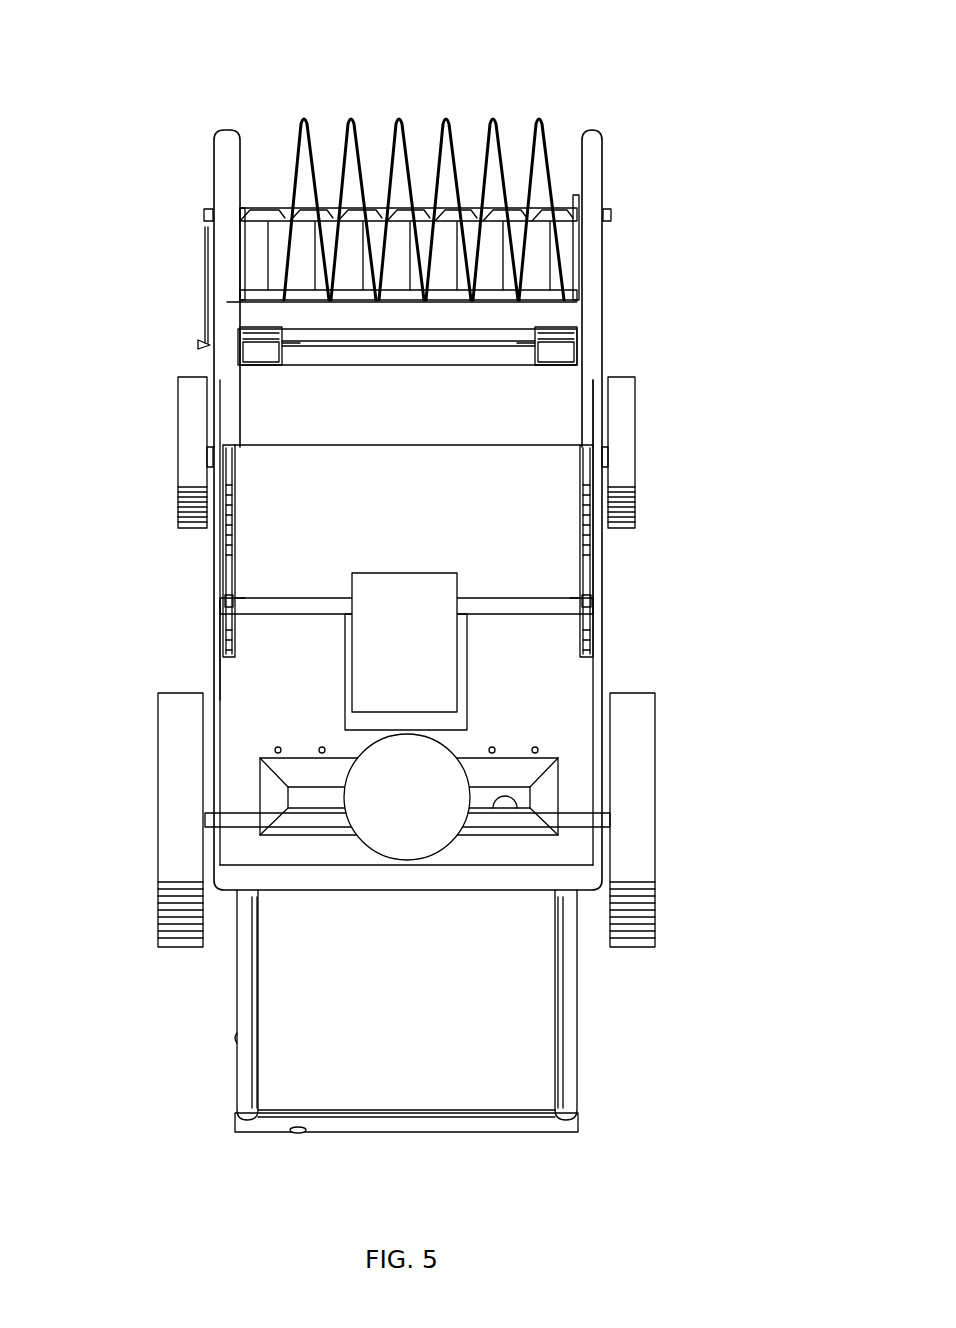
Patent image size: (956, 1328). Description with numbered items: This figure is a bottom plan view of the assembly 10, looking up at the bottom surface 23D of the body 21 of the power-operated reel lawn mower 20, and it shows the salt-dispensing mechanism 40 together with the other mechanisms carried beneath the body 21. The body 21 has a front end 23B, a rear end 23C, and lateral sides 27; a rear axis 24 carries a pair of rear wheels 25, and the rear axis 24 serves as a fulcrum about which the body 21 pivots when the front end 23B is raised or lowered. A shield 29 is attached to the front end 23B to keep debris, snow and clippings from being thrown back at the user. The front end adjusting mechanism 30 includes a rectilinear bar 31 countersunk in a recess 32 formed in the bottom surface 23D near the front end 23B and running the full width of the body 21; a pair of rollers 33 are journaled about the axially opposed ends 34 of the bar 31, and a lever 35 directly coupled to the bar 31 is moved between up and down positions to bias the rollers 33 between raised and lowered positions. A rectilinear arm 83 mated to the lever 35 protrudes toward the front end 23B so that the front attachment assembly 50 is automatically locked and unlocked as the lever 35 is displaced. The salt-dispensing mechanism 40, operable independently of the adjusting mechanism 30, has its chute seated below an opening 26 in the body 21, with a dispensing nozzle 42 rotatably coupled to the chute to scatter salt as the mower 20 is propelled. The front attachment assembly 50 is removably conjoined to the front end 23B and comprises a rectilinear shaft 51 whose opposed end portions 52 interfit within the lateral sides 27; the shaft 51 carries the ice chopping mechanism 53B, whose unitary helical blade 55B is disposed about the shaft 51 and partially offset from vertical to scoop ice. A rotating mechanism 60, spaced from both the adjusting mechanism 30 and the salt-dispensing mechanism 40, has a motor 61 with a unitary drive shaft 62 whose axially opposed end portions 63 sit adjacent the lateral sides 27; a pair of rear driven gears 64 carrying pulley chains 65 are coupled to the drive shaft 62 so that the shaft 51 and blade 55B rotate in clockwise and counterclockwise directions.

The assembly 10 is at (745, 172).
The power-operated reel lawn mower 20 is at (223, 897).
The body 21 is at (635, 378).
The front end 23B is at (222, 128).
The rear end 23C is at (322, 890).
The bottom surface 23D is at (548, 383).
The rear axis 24 is at (233, 823).
The rear wheels 25 is at (178, 707).
The opening 26 is at (518, 835).
The lateral sides 27 is at (205, 492).
The shield 29 is at (262, 298).
The front end adjusting mechanism 30 is at (427, 363).
The rectilinear bar 31 is at (360, 345).
The recess 32 is at (407, 353).
The rollers 33 is at (258, 350).
The axially opposed ends 34 is at (300, 345).
The lever 35 is at (198, 344).
The salt-dispensing mechanism 40 is at (400, 866).
The dispensing nozzle 42 is at (430, 850).
The front attachment assembly 50 is at (433, 156).
The rectilinear shaft 51 is at (258, 213).
The opposed end portions 52 is at (204, 212).
The ice chopping mechanism 53B is at (312, 110).
The helical blade 55B is at (452, 162).
The rotating mechanism 60 is at (465, 703).
The motor 61 is at (228, 675).
The drive shaft 62 is at (313, 605).
The axially opposed end portions 63 is at (242, 596).
The rear driven gears 64 is at (226, 600).
The pulley chains 65 is at (225, 490).
The rectilinear arm 83 is at (205, 255).